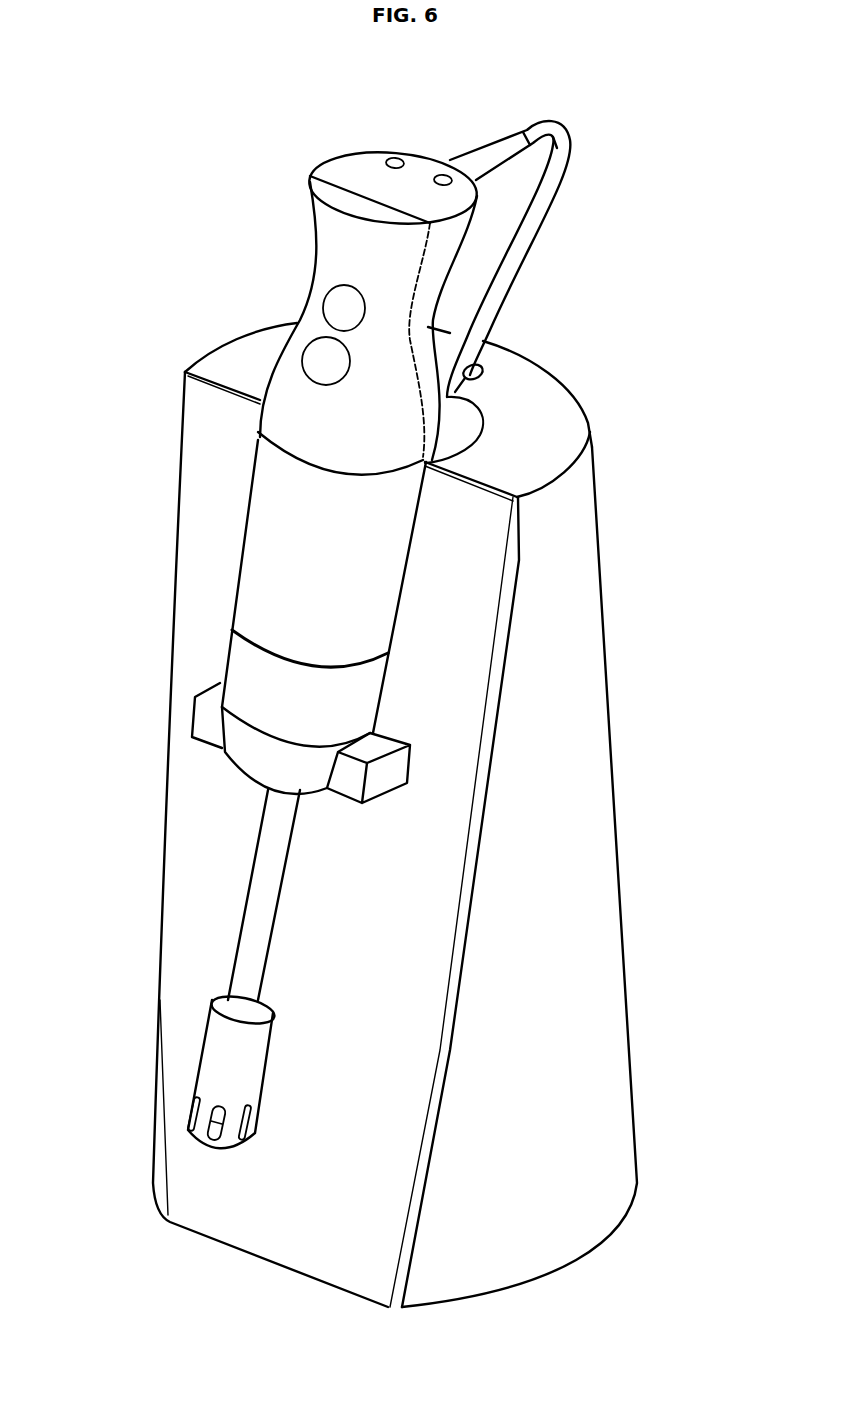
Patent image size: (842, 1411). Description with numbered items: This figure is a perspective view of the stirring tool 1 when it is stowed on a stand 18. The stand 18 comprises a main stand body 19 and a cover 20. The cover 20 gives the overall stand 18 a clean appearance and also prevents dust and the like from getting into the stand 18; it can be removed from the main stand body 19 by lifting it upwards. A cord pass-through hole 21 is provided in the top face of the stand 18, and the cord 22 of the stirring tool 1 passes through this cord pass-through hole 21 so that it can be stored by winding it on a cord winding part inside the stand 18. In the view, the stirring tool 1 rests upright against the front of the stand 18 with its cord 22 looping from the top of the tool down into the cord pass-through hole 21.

The stirring tool 1 is at (333, 164).
The stand 18 is at (380, 803).
The main stand body 19 is at (182, 608).
The cover 20 is at (598, 757).
The cord pass-through hole 21 is at (483, 343).
The cord 22 is at (522, 217).